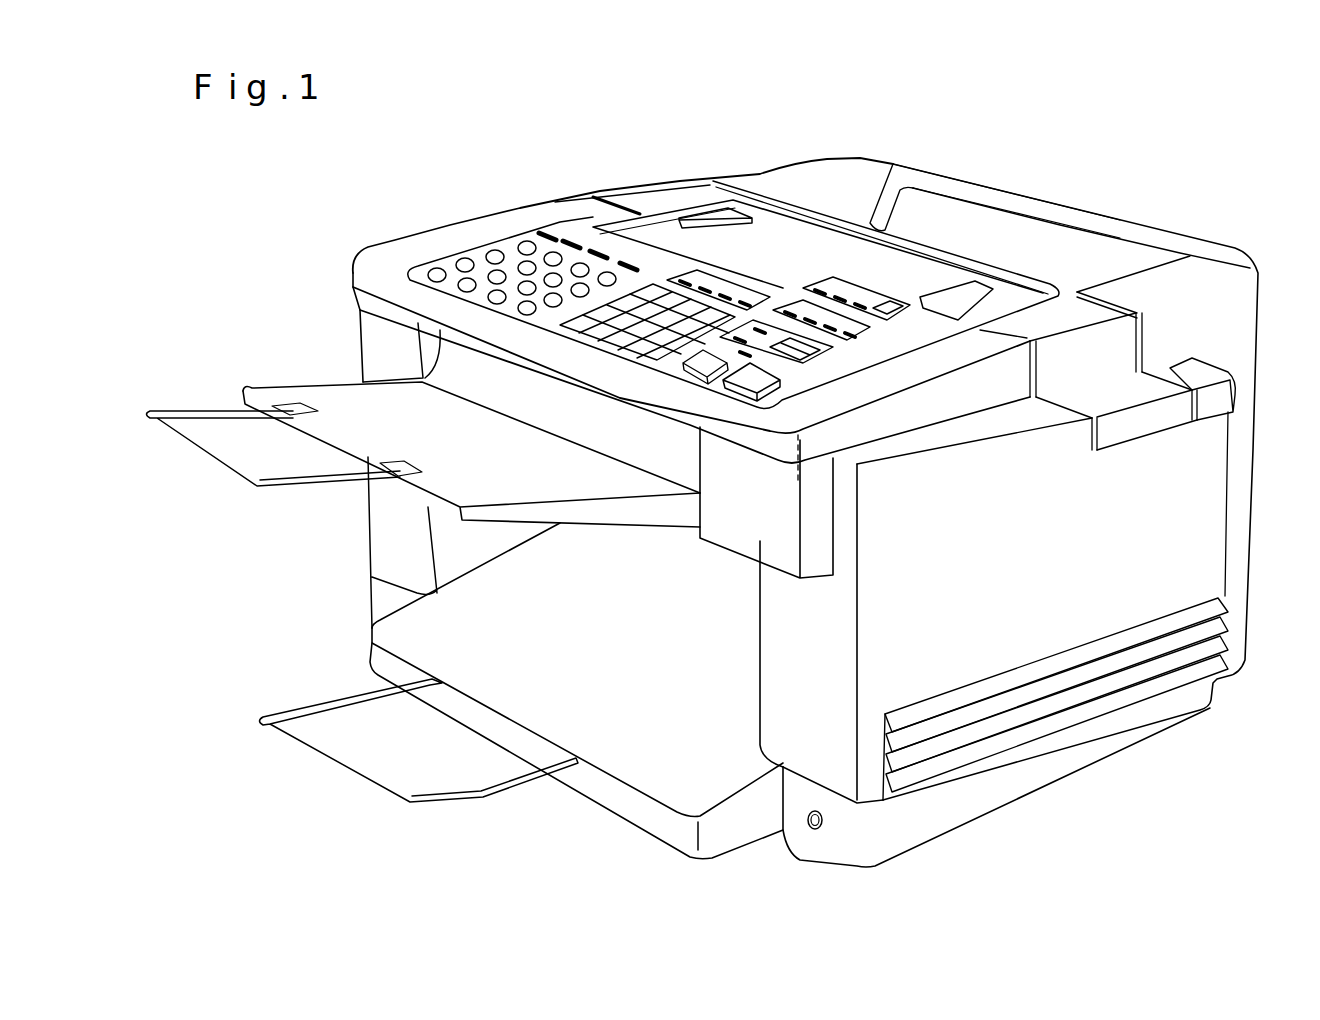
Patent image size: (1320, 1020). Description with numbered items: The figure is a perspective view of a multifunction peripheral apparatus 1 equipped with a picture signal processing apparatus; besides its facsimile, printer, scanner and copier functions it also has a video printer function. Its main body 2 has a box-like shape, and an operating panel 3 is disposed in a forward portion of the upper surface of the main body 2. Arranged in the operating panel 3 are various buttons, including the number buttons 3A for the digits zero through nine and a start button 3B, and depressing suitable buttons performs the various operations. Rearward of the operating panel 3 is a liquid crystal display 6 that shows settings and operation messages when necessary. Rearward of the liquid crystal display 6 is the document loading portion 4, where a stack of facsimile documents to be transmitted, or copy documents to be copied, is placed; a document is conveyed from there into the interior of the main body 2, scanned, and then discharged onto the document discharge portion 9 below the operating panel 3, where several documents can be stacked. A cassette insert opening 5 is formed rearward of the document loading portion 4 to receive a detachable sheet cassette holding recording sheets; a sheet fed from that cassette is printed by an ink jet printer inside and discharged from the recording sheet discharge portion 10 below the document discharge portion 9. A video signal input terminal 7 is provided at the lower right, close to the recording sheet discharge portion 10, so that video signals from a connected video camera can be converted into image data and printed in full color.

The multifunction peripheral apparatus 1 is at (1186, 172).
The main body 2 is at (1212, 533).
The operating panel 3 is at (500, 230).
The number buttons 3A is at (465, 292).
The start button 3B is at (752, 378).
The document loading portion 4 is at (777, 227).
The cassette insert opening 5 is at (970, 228).
The liquid crystal display (LCD) 6 is at (640, 228).
The video signal input terminal 7 is at (812, 830).
The document discharge portion 9 is at (522, 433).
The recording sheet discharge portion 10 is at (670, 622).